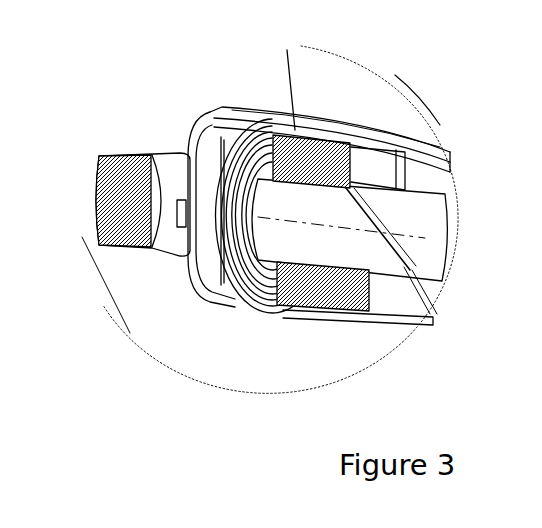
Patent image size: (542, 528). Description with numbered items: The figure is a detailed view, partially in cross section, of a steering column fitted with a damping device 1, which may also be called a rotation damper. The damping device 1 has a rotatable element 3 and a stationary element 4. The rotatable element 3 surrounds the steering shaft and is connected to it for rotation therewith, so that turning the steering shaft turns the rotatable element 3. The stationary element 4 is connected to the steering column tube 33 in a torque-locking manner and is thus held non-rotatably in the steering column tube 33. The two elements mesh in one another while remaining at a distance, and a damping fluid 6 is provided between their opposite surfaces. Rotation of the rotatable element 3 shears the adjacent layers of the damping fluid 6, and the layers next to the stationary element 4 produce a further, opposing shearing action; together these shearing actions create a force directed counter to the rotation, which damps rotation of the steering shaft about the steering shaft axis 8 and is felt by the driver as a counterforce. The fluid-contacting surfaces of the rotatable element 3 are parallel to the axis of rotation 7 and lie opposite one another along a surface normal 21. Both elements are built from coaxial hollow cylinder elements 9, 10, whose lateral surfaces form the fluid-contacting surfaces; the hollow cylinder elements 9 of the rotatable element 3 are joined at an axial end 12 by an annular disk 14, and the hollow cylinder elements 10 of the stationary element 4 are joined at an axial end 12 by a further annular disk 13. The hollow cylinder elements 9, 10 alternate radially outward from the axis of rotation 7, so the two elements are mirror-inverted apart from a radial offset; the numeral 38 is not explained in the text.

The damping device 1 is at (307, 313).
The rotatable element 3 is at (270, 120).
The stationary element 4 is at (360, 135).
The damping fluid 6 is at (318, 117).
The axis of rotation 7 is at (443, 240).
The steering shaft axis 8 is at (443, 240).
The hollow cylinder elements 9 is at (426, 316).
The hollow cylinder elements 10 is at (344, 262).
The axial end 12 is at (285, 313).
The further annular disk 13 is at (380, 172).
The annular disk 14 is at (225, 340).
The surface normal 21 is at (290, 83).
The steering column tube 33 is at (403, 150).
The knob 38 is at (107, 240).